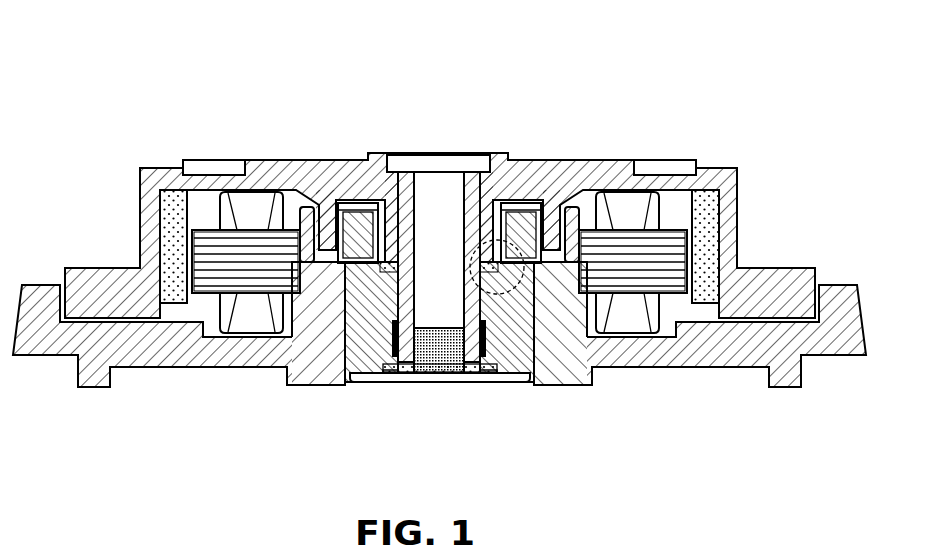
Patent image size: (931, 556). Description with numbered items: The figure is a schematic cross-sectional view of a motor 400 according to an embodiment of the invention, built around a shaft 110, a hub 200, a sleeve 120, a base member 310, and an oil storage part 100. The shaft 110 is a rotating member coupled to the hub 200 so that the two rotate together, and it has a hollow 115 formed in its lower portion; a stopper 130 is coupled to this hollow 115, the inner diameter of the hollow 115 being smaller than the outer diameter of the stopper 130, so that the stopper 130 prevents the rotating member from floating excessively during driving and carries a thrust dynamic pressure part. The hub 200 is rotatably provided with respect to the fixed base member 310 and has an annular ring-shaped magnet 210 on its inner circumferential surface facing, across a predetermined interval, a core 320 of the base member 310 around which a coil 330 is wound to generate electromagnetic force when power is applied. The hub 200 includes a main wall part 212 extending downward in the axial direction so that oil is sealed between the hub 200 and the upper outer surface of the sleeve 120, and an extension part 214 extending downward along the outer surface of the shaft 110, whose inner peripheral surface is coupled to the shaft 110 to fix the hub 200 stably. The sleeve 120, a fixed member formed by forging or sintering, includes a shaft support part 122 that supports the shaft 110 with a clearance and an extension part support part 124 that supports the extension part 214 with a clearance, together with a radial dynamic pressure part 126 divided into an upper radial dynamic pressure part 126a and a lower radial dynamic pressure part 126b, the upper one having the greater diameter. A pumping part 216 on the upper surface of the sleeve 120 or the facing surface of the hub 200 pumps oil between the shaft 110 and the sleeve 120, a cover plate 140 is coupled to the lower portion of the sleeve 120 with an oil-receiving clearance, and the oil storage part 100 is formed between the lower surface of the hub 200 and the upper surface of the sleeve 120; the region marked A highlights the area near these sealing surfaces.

The motor 400 is at (373, 40).
The oil storage part 100 is at (448, 215).
The shaft 110 is at (402, 380).
The hollow 115 is at (420, 380).
The sleeve 120 is at (500, 382).
The shaft support part 122 is at (360, 382).
The extension part support part 124 is at (372, 232).
The radial dynamic pressure part 126 is at (353, 178).
The upper radial dynamic pressure part 126a is at (330, 215).
The lower radial dynamic pressure part 126b is at (302, 278).
The stopper 130 is at (458, 380).
The cover plate 140 is at (513, 382).
The hub 200 is at (440, 203).
The annular ring-shaped magnet 210 is at (712, 237).
The main wall part 212 is at (552, 215).
The extension part 214 is at (391, 208).
The pumping part 216 is at (512, 215).
The base member 310 is at (298, 357).
The core 320 is at (209, 277).
The coil 330 is at (248, 318).
The detail region A is at (470, 256).